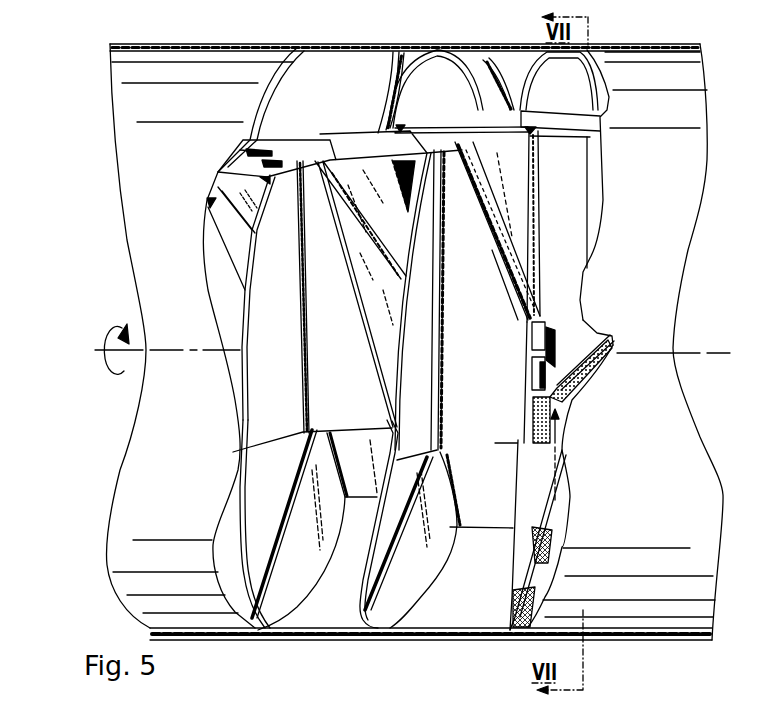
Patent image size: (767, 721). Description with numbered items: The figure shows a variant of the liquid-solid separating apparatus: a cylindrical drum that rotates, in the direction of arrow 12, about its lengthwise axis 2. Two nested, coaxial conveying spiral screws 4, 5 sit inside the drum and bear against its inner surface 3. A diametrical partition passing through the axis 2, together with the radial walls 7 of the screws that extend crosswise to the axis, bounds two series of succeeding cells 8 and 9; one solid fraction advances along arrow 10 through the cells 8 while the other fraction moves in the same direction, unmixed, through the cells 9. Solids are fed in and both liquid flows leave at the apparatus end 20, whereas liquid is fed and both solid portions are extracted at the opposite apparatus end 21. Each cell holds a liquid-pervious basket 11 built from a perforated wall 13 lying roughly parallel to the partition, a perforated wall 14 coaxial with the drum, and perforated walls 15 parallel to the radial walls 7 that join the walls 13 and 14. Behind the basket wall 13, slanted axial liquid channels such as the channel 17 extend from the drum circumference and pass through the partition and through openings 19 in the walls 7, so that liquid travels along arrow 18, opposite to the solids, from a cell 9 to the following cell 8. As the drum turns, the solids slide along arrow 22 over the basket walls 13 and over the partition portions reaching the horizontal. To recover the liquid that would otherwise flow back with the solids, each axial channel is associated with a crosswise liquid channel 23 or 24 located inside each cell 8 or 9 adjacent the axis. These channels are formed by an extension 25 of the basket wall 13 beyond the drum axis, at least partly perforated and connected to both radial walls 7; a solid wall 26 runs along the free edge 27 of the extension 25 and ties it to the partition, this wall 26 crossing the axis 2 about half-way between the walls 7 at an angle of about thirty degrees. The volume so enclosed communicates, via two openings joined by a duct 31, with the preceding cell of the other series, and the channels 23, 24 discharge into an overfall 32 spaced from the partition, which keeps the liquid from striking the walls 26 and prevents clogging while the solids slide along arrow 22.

The lengthwise axis 2 is at (707, 356).
The inner surface 3 is at (298, 47).
The conveying spiral screw 4 is at (236, 388).
The conveying spiral screw 5 is at (504, 72).
The radial walls 7 is at (281, 574).
The cells 8 is at (352, 574).
The cells 9 is at (402, 63).
The arrow 10 is at (377, 687).
The basket 11 is at (510, 638).
The arrow 12 is at (105, 366).
The perforated wall 13 is at (567, 400).
The perforated wall 14 is at (535, 597).
The perforated walls 15 is at (533, 433).
The axial channel 17 is at (250, 155).
The arrow 18 is at (398, 19).
The openings 19 is at (243, 150).
The drum section 20 is at (735, 434).
The apparatus end 21 is at (107, 454).
The arrow 22 is at (560, 453).
The liquid channel 23 is at (548, 312).
The liquid channel 24 is at (520, 375).
The extension 25 is at (613, 349).
The solid wall 26 is at (565, 373).
The free edge 27 is at (593, 362).
The duct 31 is at (538, 333).
The overfall 32 is at (537, 375).